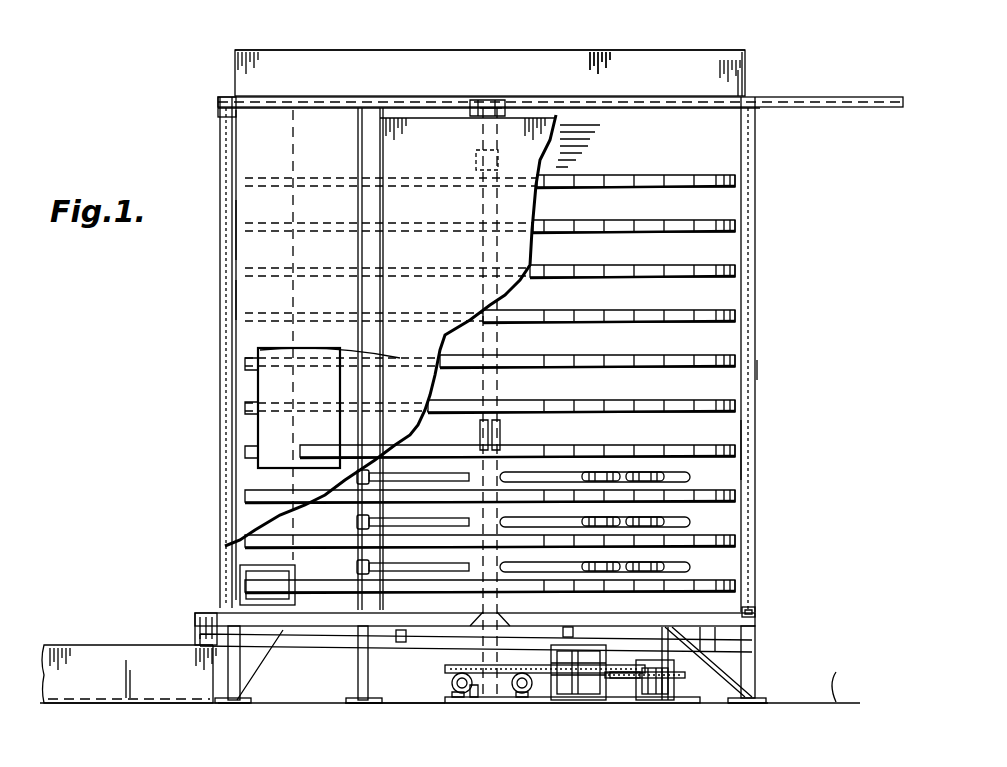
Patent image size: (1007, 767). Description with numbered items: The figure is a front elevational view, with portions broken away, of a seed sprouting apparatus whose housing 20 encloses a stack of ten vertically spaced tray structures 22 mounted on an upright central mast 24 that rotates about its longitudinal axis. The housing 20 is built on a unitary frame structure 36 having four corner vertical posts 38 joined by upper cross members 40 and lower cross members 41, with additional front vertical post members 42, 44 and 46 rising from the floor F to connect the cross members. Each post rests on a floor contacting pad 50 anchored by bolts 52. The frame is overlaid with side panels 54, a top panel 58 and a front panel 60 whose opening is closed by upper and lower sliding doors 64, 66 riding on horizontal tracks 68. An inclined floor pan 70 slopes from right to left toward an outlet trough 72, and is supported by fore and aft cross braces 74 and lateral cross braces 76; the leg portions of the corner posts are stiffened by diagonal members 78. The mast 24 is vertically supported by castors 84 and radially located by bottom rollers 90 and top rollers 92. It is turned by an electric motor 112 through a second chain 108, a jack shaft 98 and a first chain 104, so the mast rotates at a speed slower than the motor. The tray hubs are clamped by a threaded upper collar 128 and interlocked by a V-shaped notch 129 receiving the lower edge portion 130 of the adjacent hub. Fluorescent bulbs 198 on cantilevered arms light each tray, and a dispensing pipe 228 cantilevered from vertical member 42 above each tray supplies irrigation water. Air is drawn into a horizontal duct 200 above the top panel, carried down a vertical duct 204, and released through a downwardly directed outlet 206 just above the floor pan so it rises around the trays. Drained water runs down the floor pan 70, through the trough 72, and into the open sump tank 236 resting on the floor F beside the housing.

The housing 20 is at (773, 371).
The tray structure 22 is at (746, 318).
The mast 24 is at (490, 108).
The frame structure 36 is at (211, 304).
The vertical post 38 is at (228, 252).
The upper cross member 40 is at (263, 100).
The lower cross member 41 is at (747, 610).
The vertical post member 42 is at (338, 705).
The vertical post member 44 is at (613, 690).
The vertical post member 46 is at (668, 628).
The floor contacting pad 50 is at (240, 703).
The bolt 52 is at (240, 700).
The side panel 54 is at (220, 429).
The top panel 58 is at (690, 96).
The front panel 60 is at (312, 210).
The upper sliding door 64 is at (420, 136).
The lower sliding door 66 is at (402, 392).
The horizontal track 68 is at (830, 98).
The inclined floor pan 70 is at (300, 635).
The outlet trough 72 is at (208, 615).
The fore and aft cross brace 74 is at (408, 641).
The lateral cross brace 76 is at (730, 636).
The diagonal member 78 is at (258, 657).
The castor 84 is at (452, 676).
The bottom roller 90 is at (492, 690).
The top roller 92 is at (508, 110).
The jack shaft 98 is at (575, 685).
The first chain 104 is at (540, 672).
The second chain 108 is at (634, 680).
The electric motor 112 is at (686, 685).
The upper collar 128 is at (478, 158).
The V-shaped notch 129 is at (493, 434).
The lower edge portion 130 is at (486, 432).
The fluorescent bulb 198 is at (680, 560).
The horizontal duct 200 is at (598, 50).
The vertical duct 204 is at (255, 160).
The outlet 206 is at (248, 570).
The dispensing pipe 228 is at (383, 553).
The sump tank 236 is at (86, 645).
The floor F is at (450, 675).